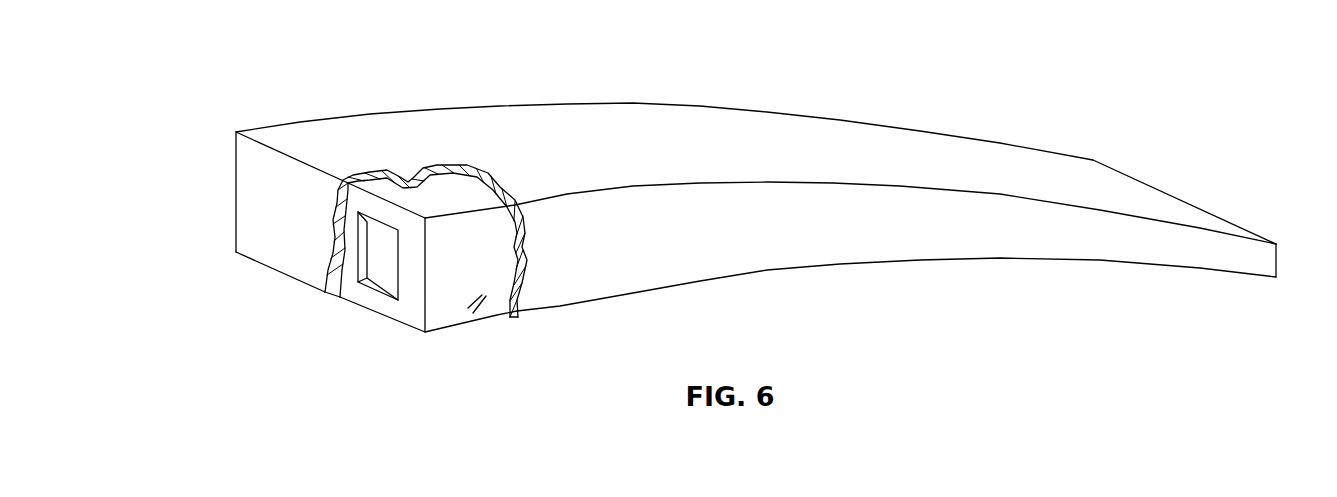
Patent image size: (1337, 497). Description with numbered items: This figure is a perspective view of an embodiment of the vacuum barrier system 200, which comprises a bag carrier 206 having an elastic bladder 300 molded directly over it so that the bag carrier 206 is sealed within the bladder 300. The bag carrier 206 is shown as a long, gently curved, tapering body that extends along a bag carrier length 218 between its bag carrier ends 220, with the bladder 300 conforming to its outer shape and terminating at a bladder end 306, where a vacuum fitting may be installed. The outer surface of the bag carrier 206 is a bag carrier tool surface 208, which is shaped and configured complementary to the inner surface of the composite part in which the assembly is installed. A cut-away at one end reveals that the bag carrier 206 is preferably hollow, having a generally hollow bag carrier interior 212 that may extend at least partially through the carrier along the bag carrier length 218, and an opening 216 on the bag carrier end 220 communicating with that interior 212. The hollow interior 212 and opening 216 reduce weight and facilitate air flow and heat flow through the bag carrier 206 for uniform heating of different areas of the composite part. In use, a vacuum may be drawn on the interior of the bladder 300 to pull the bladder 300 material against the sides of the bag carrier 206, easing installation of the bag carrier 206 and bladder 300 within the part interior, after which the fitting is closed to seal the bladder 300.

The vacuum barrier system 200 is at (745, 212).
The bladder 300 is at (627, 115).
The bladder end 306 is at (236, 132).
The bag carrier end 220 is at (236, 252).
The bag carrier length 218 is at (837, 266).
The bag carrier 206 is at (443, 329).
The bag carrier tool surface 208 is at (478, 313).
The opening 216 is at (383, 295).
The hollow bag carrier interior 212 is at (388, 249).